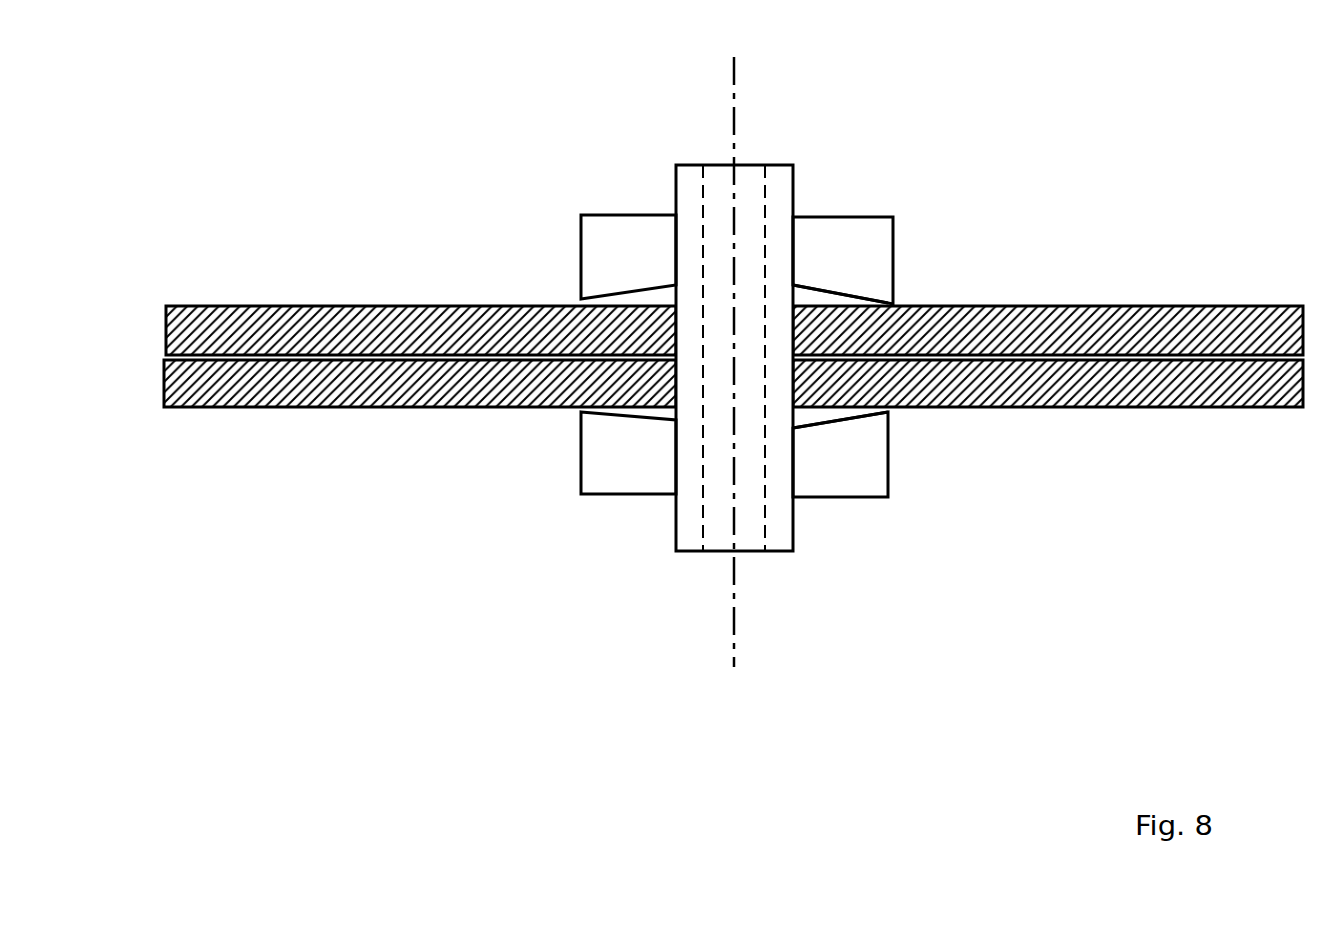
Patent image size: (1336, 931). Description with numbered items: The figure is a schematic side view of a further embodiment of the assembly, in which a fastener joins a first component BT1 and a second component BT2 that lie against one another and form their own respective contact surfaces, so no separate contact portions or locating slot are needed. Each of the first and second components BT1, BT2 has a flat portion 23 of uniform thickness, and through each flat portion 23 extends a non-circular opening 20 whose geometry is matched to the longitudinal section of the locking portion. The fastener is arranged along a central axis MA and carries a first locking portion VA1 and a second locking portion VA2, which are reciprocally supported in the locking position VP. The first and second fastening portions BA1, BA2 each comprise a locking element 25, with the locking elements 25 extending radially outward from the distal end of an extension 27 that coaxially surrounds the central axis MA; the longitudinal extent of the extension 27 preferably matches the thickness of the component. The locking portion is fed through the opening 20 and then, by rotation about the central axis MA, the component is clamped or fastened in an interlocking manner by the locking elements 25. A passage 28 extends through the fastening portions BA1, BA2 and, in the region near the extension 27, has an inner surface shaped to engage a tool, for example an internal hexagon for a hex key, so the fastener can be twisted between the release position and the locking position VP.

The non-circular opening 20 is at (674, 300).
The flat portion 23 is at (820, 300).
The locking element 25 is at (608, 249).
The extension 27 is at (783, 547).
The passage 28 is at (753, 533).
The central axis MA is at (741, 347).
The first fastening portion BA1 is at (630, 527).
The second fastening portion BA2 is at (935, 178).
The first locking portion VA1 is at (917, 455).
The second locking portion VA2 is at (558, 233).
The locking position VP is at (985, 548).
The first component BT1 is at (1117, 383).
The second component BT2 is at (1117, 323).